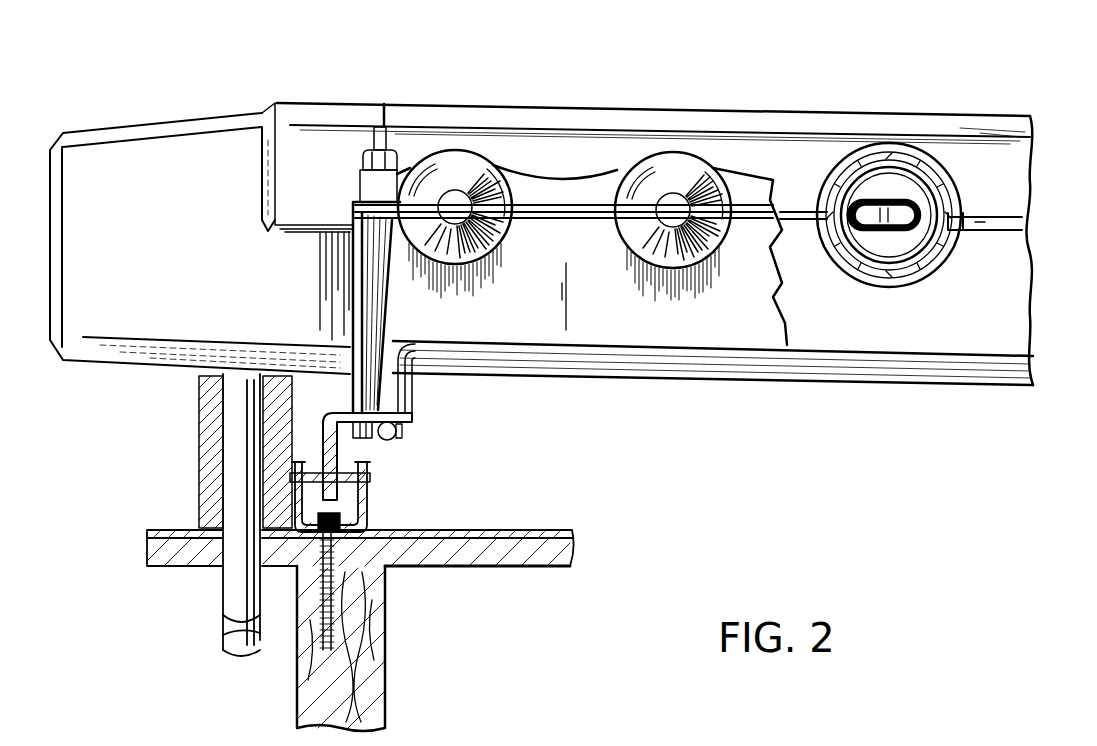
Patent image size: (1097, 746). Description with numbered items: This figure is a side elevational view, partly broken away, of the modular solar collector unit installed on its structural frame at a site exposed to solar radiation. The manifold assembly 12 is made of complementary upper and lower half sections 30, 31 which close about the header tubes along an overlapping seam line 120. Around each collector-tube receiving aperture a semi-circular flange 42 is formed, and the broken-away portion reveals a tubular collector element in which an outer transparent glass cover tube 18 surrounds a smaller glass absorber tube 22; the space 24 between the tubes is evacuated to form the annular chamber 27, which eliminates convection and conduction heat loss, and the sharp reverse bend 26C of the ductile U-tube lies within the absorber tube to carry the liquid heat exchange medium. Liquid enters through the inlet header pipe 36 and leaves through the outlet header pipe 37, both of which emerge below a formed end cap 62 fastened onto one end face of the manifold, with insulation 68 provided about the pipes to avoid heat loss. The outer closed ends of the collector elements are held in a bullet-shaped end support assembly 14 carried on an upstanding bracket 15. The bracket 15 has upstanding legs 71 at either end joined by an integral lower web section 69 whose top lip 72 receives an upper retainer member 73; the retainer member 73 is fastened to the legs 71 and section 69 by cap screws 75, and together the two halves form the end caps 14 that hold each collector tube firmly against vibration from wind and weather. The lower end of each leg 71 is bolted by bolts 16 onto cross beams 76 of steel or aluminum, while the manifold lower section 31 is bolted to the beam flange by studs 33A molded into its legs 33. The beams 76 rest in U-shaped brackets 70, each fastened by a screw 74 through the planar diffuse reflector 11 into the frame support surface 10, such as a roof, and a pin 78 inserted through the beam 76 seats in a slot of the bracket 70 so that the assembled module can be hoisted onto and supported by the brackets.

The frame support surface 10 is at (378, 595).
The planar diffuse reflector 11 is at (497, 543).
The manifold assembly 12 is at (760, 100).
The end support assembly 14 is at (670, 160).
The upstanding bracket 15 is at (350, 205).
The bolts 16 is at (383, 443).
The outer transparent glass cover tube 18 is at (887, 157).
The glass absorber tube 22 is at (865, 177).
The space 24 is at (878, 167).
The reverse bend 26C is at (905, 230).
The annular chamber 27 is at (887, 245).
The upper half section 30 is at (987, 190).
The lower half section 31 is at (1002, 327).
The legs 33 is at (410, 385).
The studs 33A is at (397, 435).
The inlet header pipe 36 is at (235, 635).
The outlet header pipe 37 is at (235, 583).
The semi-circular flange 42 is at (822, 197).
The end cap 62 is at (180, 263).
The insulation 68 is at (212, 458).
The lower web section 69 is at (618, 318).
The U-shaped brackets 70 is at (368, 510).
The upstanding legs 71 is at (352, 298).
The top lip 72 is at (555, 213).
The retainer member 73 is at (745, 190).
The screw 74 is at (323, 553).
The cap screws 75 is at (377, 128).
The cross beams 76 is at (340, 418).
The pin 78 is at (315, 475).
The overlapping seam line 120 is at (979, 224).